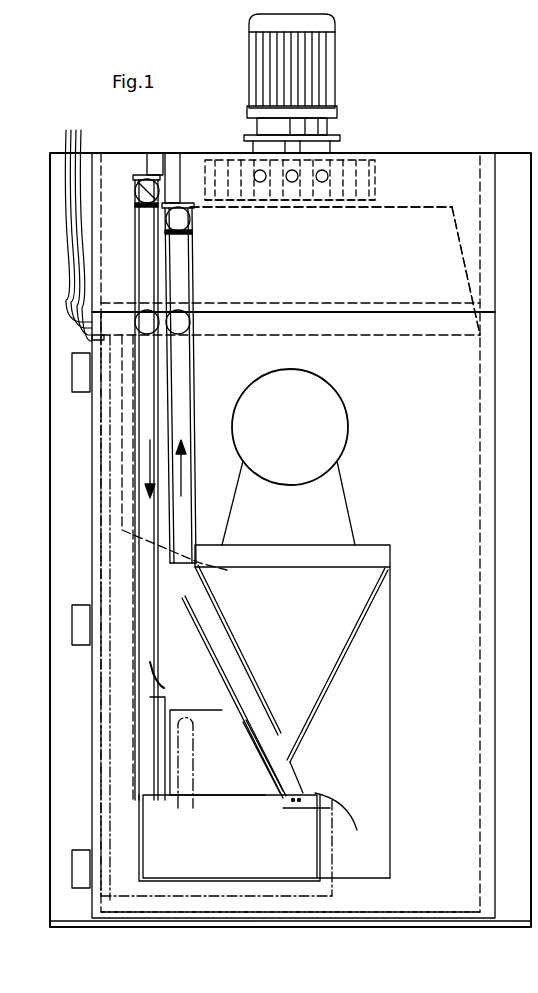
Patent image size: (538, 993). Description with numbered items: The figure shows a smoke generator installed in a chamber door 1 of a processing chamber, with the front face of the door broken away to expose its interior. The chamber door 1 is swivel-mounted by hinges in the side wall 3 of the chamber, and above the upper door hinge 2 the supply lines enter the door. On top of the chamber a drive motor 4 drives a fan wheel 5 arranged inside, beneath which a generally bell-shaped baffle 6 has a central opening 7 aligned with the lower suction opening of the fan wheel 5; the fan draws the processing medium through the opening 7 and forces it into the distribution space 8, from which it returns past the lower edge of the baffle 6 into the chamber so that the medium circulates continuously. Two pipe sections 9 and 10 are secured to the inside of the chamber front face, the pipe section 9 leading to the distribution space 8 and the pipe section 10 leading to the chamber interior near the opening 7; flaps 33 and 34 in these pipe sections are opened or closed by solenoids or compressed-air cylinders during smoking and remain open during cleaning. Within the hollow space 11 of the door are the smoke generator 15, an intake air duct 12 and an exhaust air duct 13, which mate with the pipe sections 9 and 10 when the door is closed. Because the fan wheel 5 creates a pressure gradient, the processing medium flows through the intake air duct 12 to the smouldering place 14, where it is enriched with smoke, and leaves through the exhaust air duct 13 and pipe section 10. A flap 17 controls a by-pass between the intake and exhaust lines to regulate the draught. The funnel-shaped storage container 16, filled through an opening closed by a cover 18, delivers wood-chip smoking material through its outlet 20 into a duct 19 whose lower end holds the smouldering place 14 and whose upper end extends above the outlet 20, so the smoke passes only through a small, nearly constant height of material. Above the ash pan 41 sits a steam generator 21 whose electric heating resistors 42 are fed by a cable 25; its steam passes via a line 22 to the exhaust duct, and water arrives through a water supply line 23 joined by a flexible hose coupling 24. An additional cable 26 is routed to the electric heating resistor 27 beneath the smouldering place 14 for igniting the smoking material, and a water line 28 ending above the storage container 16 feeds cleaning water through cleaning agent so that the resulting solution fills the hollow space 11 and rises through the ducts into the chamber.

The chamber door 1 is at (290, 540).
The door hinge 2 is at (72, 392).
The side wall 3 is at (144, 452).
The drive motor 4 is at (330, 76).
The fan wheel 5 is at (362, 162).
The baffle 6 is at (458, 234).
The opening 7 is at (275, 205).
The distribution space 8 is at (280, 195).
The pipe section 9 is at (140, 286).
The pipe section 10 is at (172, 258).
The hollow space 11 is at (292, 711).
The intake air duct 12 is at (153, 512).
The exhaust air duct 13 is at (172, 485).
The smouldering place 14 is at (313, 782).
The smoke generator 15 is at (374, 764).
The storage container 16 is at (318, 648).
The flap 17 is at (165, 688).
The cover 18 is at (325, 372).
The duct 19 is at (285, 745).
The outlet 20 is at (290, 768).
The steam generator 21 is at (217, 752).
The line 22 is at (150, 652).
The water supply line 23 is at (135, 400).
The flexible hose coupling 24 is at (78, 190).
The cable 25 is at (110, 363).
The additional cable 26 is at (75, 323).
The electric heating resistor 27 is at (306, 808).
The water line 28 is at (225, 568).
The flap 33 is at (137, 178).
The flap 34 is at (173, 200).
The ash pan 41 is at (229, 838).
The electric heating resistors 42 is at (185, 745).